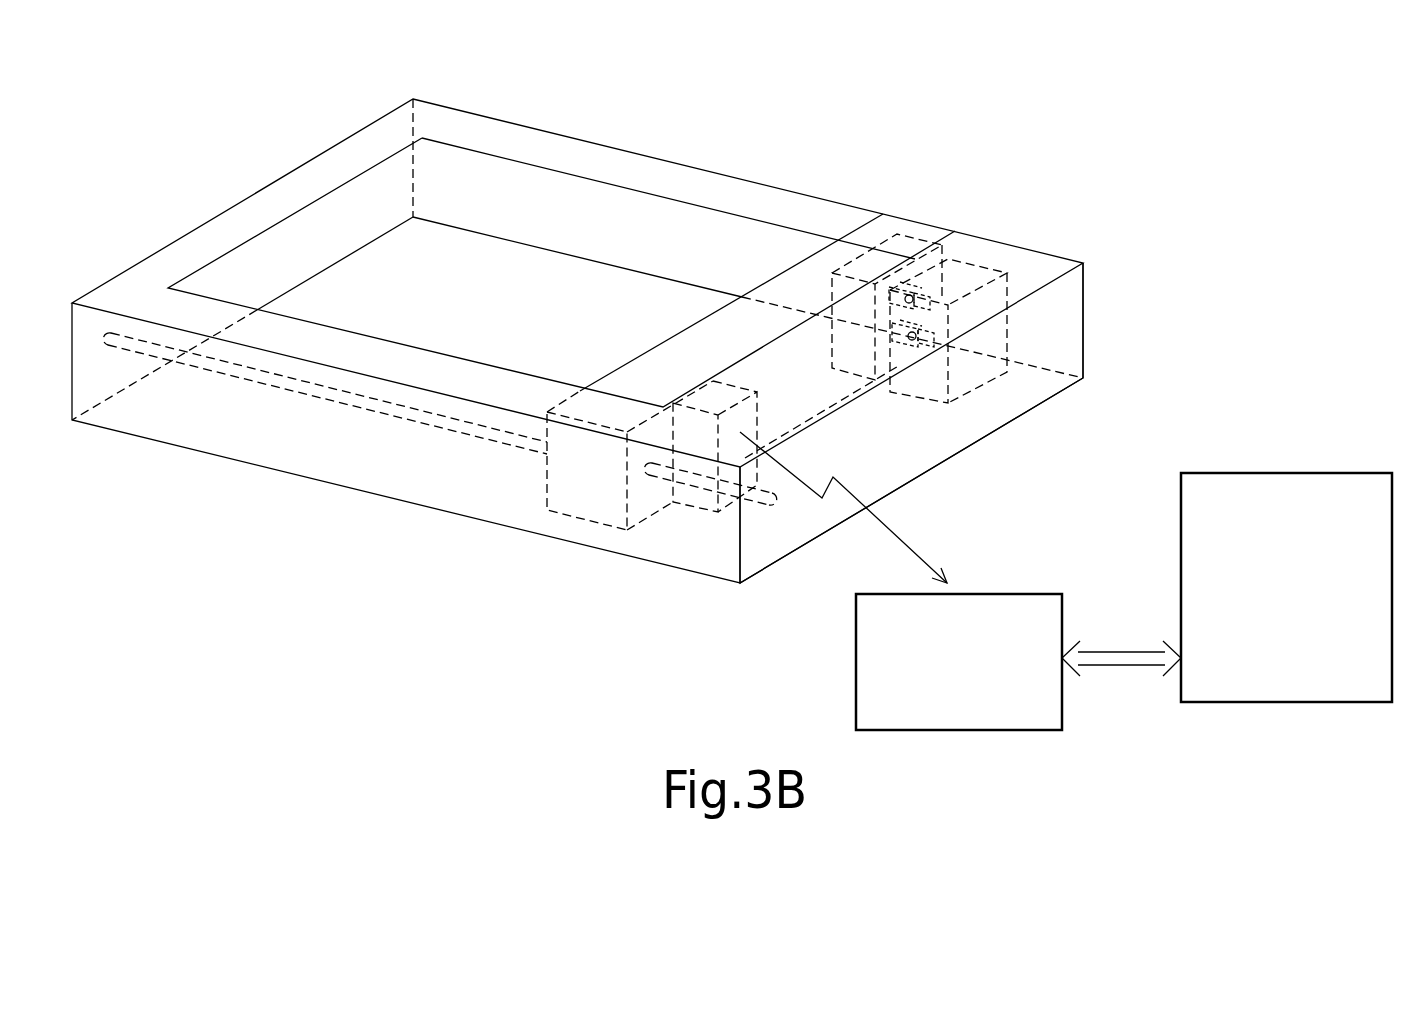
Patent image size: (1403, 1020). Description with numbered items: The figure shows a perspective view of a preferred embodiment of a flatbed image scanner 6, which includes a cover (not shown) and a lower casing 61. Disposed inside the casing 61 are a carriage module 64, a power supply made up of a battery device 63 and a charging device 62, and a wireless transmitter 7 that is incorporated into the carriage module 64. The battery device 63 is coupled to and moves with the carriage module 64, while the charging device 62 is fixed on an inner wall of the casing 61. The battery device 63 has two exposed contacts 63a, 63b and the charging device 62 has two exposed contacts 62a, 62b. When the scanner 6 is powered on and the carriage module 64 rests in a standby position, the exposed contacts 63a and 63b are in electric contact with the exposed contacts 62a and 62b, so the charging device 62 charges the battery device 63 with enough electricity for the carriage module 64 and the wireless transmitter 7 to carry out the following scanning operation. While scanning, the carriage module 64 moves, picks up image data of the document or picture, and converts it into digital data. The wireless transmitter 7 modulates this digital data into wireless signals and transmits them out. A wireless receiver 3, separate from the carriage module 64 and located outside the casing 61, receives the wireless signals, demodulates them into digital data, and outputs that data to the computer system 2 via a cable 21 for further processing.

The computer system 2 is at (1328, 490).
The wireless receiver 3 is at (1009, 612).
The flatbed image scanner 6 is at (512, 140).
The wireless transmitter 7 is at (690, 433).
The cable 21 is at (1115, 663).
The lower casing 61 is at (883, 463).
The charging device 62 is at (980, 302).
The exposed contact 62a is at (917, 283).
The exposed contact 62b is at (935, 345).
The battery device 63 is at (880, 262).
The exposed contact 63a is at (900, 280).
The exposed contact 63b is at (913, 340).
The carriage module 64 is at (908, 243).